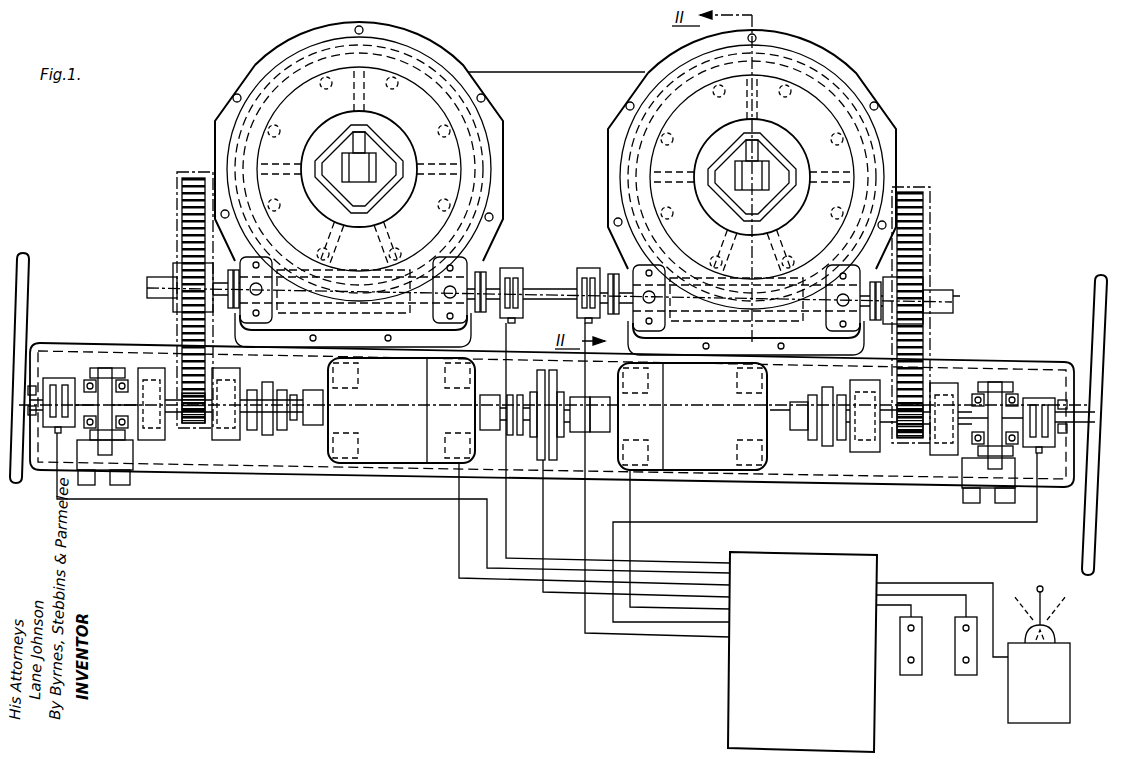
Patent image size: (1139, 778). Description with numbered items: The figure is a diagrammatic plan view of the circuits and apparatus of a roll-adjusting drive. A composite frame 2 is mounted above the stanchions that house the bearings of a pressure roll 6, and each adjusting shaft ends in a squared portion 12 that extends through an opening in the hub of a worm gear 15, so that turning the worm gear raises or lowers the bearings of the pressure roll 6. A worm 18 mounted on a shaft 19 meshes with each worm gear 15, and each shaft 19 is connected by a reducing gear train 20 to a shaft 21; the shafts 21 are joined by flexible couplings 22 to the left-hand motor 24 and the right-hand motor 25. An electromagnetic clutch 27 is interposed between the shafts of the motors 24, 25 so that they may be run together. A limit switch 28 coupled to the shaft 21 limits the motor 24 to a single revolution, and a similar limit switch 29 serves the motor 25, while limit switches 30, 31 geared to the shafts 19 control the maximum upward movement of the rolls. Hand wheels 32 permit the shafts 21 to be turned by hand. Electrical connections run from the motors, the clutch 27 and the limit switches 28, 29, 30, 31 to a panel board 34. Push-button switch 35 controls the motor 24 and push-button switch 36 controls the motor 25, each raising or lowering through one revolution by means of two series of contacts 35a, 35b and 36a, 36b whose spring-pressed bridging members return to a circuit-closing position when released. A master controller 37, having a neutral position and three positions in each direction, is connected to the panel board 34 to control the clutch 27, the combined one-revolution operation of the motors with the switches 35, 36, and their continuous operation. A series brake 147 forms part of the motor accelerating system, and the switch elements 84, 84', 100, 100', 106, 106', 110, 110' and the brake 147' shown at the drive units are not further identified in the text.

The composite frame 2 is at (974, 333).
The pressure roll 6 is at (531, 72).
The squared portion 12 is at (372, 137).
The worm gear 15 is at (298, 82).
The worm 18 is at (340, 288).
The shaft 19 is at (160, 277).
The reducing gear train 20 is at (186, 323).
The shaft 21 is at (207, 424).
The flexible coupling 22 is at (272, 436).
The motor 24 is at (384, 465).
The motor 25 is at (708, 472).
The electromagnetic clutch 27 is at (556, 470).
The limit switch 28 is at (57, 435).
The limit switch 29 is at (1060, 413).
The limit switch 30 is at (514, 270).
The limit switch 31 is at (586, 270).
The hand wheel 32 is at (29, 301).
The panel board 34 is at (802, 652).
The push button switch 35 is at (912, 676).
The switch contact 35a is at (908, 630).
The switch contact 35b is at (908, 660).
The push button switch 36 is at (966, 676).
The switch contact 36a is at (972, 628).
The switch contact 36b is at (970, 661).
The master controller 37 is at (1058, 686).
The switch box 84 is at (51, 391).
The switch box 84' is at (1033, 414).
The contact 100 is at (532, 285).
The contact 100' is at (563, 295).
The contact 106 is at (536, 293).
The contact 106' is at (570, 304).
The switch arm 110 is at (106, 401).
The switch arm 110' is at (1023, 422).
The series brake 147 is at (106, 362).
The switch shaft 147' is at (998, 377).